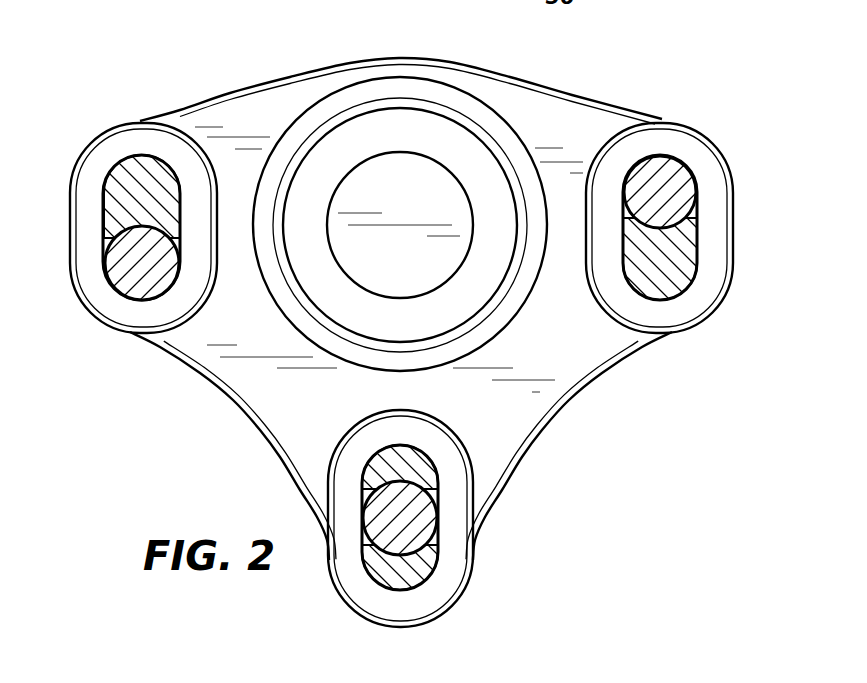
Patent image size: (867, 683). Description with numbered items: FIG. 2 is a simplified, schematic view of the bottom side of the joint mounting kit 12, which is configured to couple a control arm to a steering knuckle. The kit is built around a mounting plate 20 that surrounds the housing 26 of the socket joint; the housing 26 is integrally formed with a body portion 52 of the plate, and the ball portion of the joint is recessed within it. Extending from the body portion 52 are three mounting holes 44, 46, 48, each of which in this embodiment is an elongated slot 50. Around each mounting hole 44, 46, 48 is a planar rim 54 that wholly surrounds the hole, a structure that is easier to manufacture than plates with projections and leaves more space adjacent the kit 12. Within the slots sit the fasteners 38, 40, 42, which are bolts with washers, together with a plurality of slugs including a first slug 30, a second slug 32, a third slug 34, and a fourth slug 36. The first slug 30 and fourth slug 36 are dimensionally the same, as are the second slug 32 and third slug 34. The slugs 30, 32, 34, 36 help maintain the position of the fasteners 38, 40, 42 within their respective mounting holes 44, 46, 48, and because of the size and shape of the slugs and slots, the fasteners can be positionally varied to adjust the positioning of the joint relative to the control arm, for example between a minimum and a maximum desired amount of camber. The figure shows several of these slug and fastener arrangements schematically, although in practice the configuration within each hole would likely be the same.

The joint mounting kit 12 is at (402, 327).
The mounting plate 20 is at (549, 112).
The housing 26 is at (406, 106).
The first slug 30 is at (96, 159).
The second slug 32 is at (383, 577).
The third slug 34 is at (396, 448).
The fourth slug 36 is at (668, 268).
The fastener 38 is at (118, 263).
The fastener 40 is at (415, 515).
The fastener 42 is at (690, 168).
The mounting hole 44 is at (132, 164).
The mounting hole 46 is at (422, 458).
The mounting hole 48 is at (645, 262).
The elongated slot 50 is at (100, 232).
The body portion 52 is at (250, 118).
The planar rim 54 is at (110, 307).